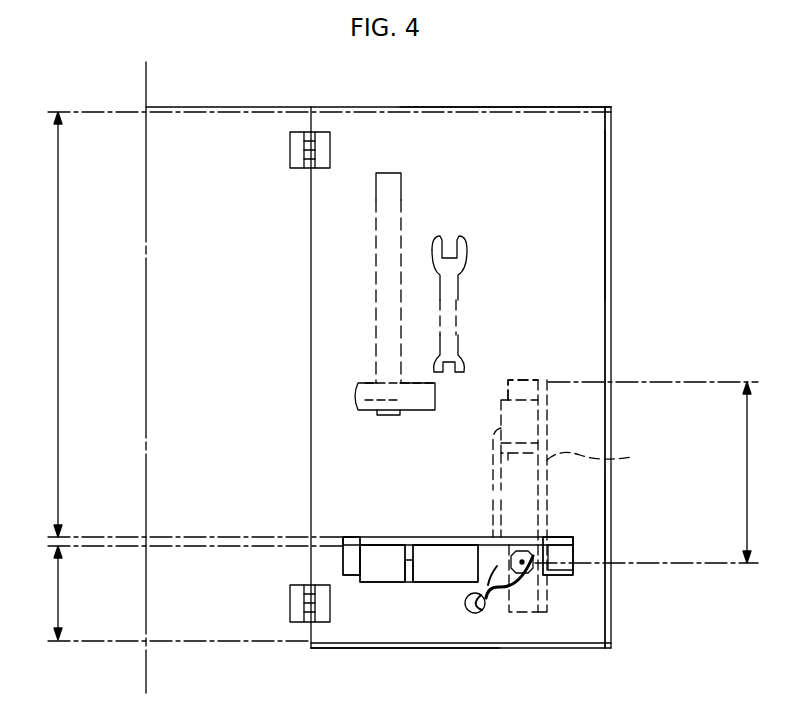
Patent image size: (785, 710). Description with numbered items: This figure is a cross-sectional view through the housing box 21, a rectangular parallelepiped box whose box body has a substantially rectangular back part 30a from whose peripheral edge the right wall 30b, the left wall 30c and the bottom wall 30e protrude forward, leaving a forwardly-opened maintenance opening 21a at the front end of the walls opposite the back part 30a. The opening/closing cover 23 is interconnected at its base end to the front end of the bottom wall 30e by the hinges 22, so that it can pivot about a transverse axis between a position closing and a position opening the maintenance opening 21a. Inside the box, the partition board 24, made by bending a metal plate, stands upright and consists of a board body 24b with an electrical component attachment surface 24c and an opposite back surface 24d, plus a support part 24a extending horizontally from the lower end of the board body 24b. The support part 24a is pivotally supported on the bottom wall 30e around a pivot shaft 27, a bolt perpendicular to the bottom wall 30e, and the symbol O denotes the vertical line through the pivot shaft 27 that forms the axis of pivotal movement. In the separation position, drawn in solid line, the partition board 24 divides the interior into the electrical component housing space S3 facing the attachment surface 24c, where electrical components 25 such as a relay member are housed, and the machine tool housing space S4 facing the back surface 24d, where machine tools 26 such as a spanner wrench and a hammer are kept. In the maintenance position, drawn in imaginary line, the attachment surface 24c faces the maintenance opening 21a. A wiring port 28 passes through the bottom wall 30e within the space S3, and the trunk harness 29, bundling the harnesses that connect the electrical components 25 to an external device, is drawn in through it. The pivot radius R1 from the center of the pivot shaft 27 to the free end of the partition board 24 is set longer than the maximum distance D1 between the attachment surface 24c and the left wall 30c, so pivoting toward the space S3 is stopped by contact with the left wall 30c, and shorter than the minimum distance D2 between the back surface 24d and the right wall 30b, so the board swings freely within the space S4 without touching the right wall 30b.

The housing box 21 is at (612, 323).
The maintenance opening 21a is at (311, 440).
The hinges 22 is at (290, 150).
The opening/closing cover 23 is at (170, 314).
The partition board 24 is at (462, 433).
The support part 24a is at (575, 597).
The board body 24b is at (612, 496).
The electrical component attachment surface 24c is at (343, 562).
The back surface 24d is at (360, 537).
The electrical components 25 is at (378, 585).
The machine tools 26 is at (465, 240).
The pivot shaft 27 is at (528, 560).
The wiring port 28 is at (468, 612).
The trunk harness 29 is at (497, 590).
The vertical line passing the pivot shaft O is at (550, 575).
The back part 30a is at (611, 520).
The right wall 30b is at (512, 107).
The left wall 30c is at (330, 648).
The bottom wall 30e is at (558, 175).
The maximum distance D1 is at (38, 593).
The minimum distance D2 is at (38, 324).
The pivot radius R1 is at (659, 472).
The electrical component housing space S3 is at (437, 630).
The machine tool housing space S4 is at (555, 283).